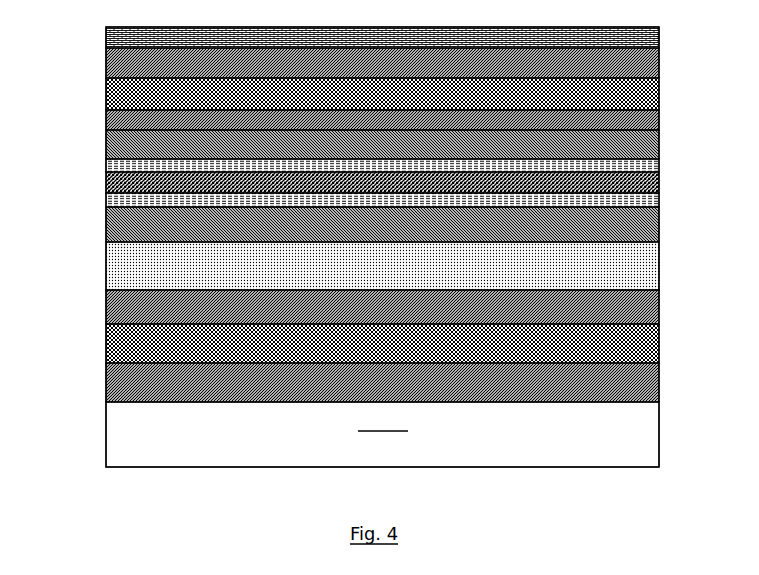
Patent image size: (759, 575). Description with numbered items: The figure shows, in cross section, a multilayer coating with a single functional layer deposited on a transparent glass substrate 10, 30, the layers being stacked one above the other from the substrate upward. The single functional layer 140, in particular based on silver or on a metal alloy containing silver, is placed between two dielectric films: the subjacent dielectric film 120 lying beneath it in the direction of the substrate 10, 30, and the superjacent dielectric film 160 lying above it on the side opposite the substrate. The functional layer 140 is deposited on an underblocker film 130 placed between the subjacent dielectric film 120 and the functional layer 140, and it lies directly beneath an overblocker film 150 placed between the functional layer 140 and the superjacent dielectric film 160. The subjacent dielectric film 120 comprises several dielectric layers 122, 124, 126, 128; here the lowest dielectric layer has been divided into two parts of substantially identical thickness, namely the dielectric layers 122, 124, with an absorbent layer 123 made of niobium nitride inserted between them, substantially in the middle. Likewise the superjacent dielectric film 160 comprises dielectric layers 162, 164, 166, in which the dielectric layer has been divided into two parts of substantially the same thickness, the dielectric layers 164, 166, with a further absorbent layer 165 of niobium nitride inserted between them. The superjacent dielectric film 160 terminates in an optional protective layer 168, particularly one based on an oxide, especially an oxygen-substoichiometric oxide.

The transparent glass substrate 10 is at (382, 434).
The transparent glass substrate 30 is at (382, 434).
The subjacent dielectric film 120 is at (665, 210).
The dielectric layer 122 is at (124, 380).
The absorbent layer 123 is at (124, 340).
The dielectric layer 124 is at (124, 308).
The dielectric layer 126 is at (124, 265).
The dielectric layer 128 is at (123, 230).
The underblocker film 130 is at (125, 198).
The functional layer 140 is at (637, 181).
The overblocker film 150 is at (130, 168).
The superjacent dielectric film 160 is at (665, 27).
The dielectric layer 162 is at (120, 142).
The dielectric layer 164 is at (120, 112).
The absorbent layer 165 is at (120, 97).
The dielectric layer 166 is at (122, 53).
The protective layer 168 is at (117, 30).